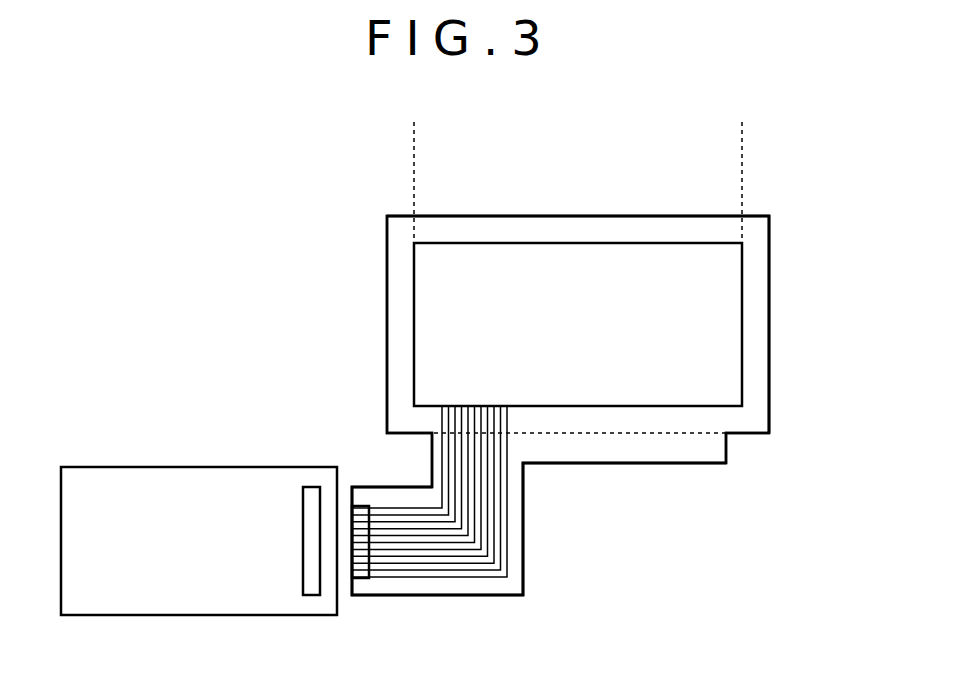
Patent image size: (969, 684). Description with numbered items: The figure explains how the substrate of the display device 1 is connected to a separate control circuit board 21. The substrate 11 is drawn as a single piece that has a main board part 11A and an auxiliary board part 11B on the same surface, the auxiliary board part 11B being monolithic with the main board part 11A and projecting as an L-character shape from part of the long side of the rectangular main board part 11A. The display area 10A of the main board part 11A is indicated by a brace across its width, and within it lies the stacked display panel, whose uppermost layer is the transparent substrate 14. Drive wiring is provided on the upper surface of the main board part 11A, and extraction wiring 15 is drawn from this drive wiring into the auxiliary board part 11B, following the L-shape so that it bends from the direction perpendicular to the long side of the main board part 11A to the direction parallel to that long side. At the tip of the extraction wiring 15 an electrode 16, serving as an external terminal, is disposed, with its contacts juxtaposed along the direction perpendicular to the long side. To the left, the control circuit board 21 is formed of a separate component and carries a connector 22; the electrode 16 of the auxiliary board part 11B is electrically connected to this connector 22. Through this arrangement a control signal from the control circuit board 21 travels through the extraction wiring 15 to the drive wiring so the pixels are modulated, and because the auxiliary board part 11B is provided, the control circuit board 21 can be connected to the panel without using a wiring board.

The display device 1 is at (699, 88).
The display area 10A is at (414, 128).
The substrate 11 is at (755, 225).
The main board part 11A is at (797, 215).
The auxiliary board part 11B is at (797, 438).
The transparent substrate 14 is at (671, 258).
The extraction wiring 15 is at (508, 527).
The electrode 16 is at (364, 578).
The control circuit board 21 is at (182, 477).
The connector 22 is at (308, 497).